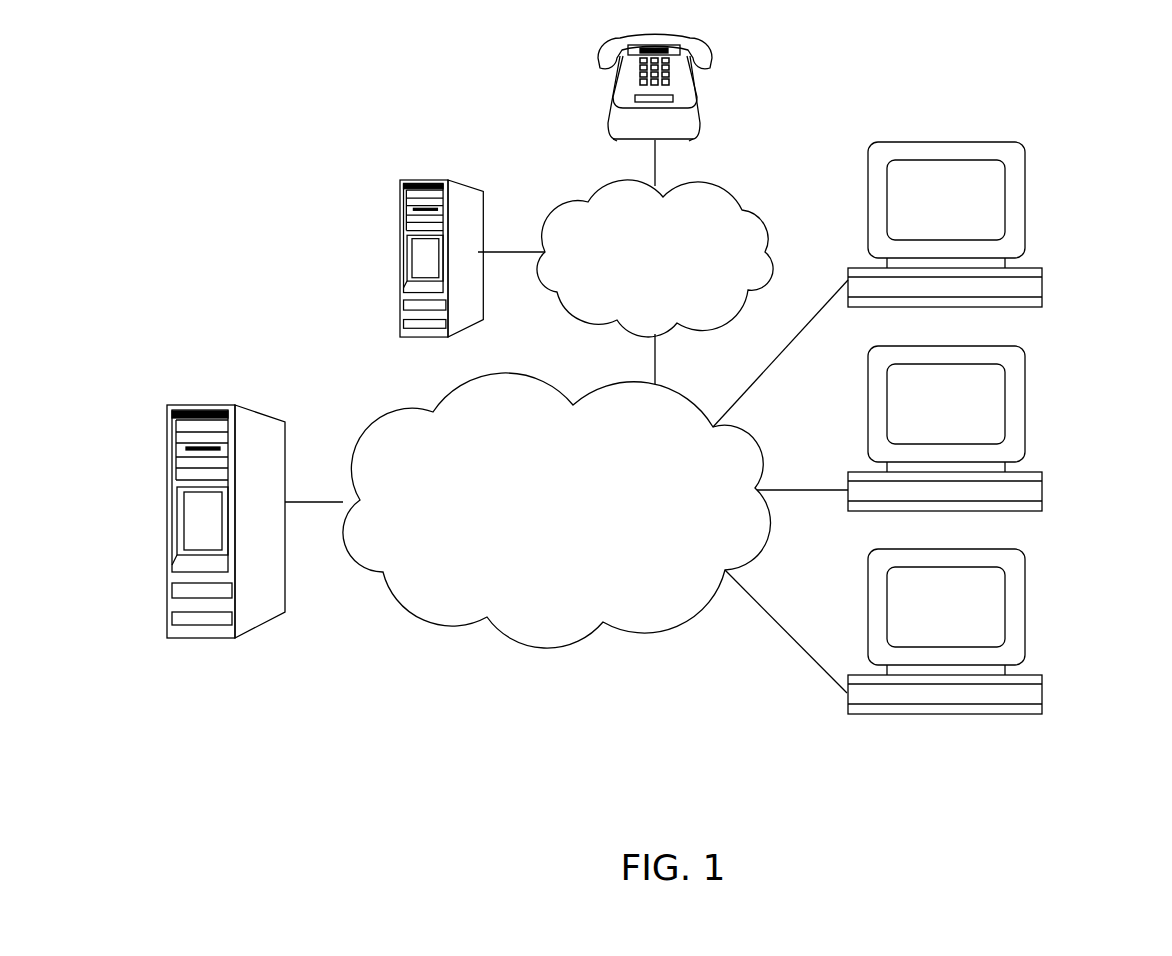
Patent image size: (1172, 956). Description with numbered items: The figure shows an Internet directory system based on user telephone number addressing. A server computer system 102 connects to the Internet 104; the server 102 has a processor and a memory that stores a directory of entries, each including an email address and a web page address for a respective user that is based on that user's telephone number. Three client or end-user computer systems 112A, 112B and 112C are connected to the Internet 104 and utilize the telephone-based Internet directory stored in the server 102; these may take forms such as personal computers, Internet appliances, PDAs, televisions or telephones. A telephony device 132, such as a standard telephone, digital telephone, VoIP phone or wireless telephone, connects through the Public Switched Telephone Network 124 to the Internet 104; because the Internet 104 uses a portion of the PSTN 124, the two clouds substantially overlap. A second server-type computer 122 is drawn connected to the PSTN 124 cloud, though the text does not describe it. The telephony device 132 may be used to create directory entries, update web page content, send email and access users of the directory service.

The server computer system 102 is at (168, 520).
The Internet 104 is at (536, 538).
The computer system 112A is at (1043, 285).
The computer system 112B is at (998, 428).
The computer system 112C is at (998, 631).
The server 122 is at (402, 258).
The Public Switched Telephone Network 124 is at (676, 283).
The telephony device 132 is at (698, 102).